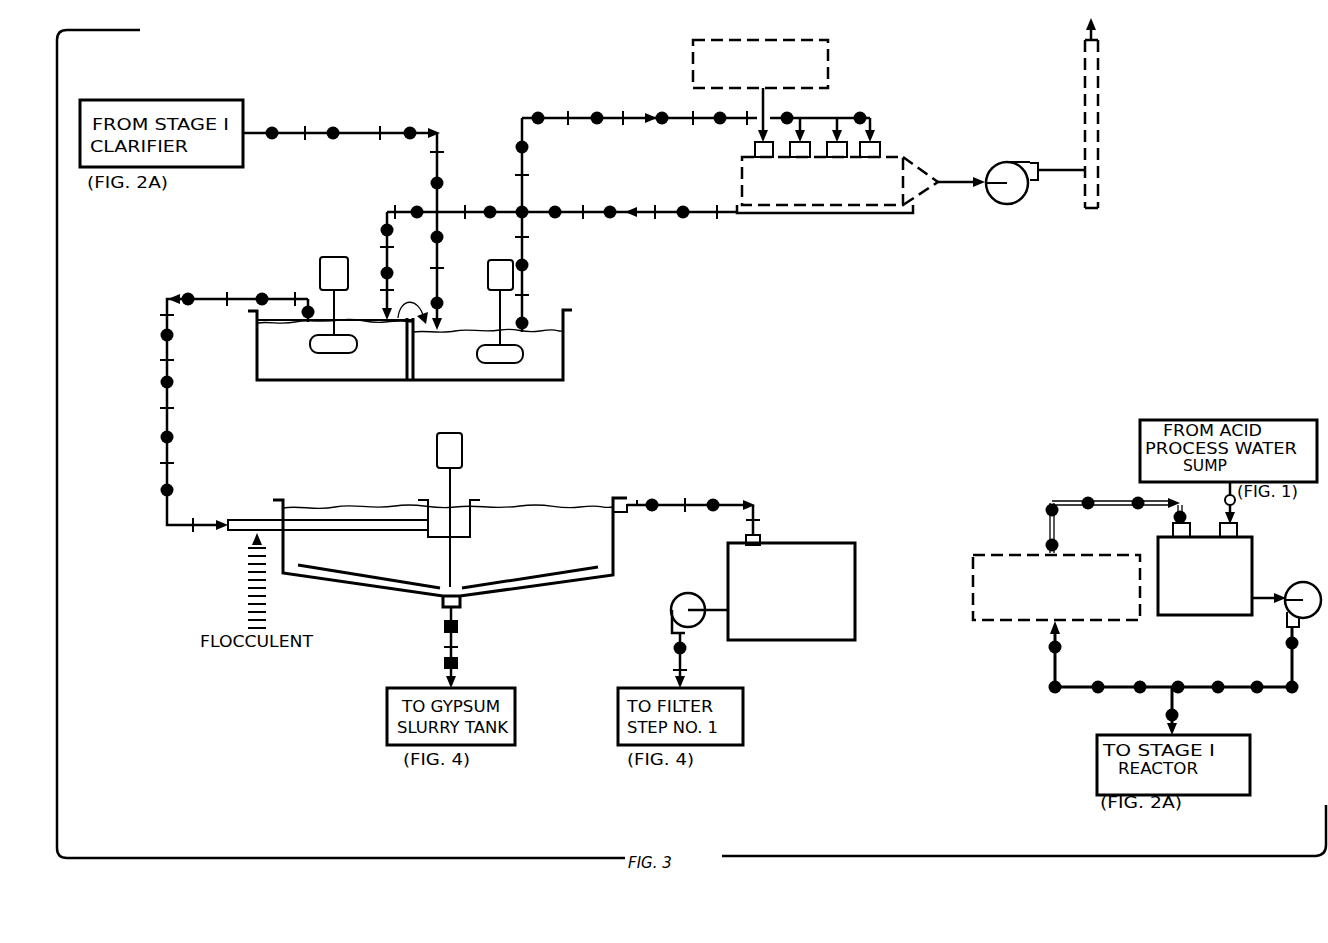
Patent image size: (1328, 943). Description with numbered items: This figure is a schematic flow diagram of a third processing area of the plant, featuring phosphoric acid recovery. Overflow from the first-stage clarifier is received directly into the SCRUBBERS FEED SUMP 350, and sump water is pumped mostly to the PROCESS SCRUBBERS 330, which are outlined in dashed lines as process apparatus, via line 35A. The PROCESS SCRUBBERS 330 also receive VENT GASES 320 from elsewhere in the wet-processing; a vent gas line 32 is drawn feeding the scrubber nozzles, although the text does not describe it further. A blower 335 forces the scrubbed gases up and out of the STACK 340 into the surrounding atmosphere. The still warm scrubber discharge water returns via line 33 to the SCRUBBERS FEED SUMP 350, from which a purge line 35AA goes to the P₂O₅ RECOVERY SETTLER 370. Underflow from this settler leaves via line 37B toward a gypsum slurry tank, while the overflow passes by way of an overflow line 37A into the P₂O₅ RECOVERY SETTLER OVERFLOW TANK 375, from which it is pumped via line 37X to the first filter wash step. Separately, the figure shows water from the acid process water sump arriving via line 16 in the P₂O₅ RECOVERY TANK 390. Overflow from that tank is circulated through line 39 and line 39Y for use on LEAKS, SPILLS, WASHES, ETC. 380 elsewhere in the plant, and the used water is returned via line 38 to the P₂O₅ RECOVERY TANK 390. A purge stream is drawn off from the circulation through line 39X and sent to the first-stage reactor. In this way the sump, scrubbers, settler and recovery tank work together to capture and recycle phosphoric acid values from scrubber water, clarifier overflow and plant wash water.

The line 16 is at (1236, 503).
The vent gas line 32 is at (765, 102).
The line 33 is at (683, 216).
The line 35A is at (524, 187).
The purge line 35AA is at (162, 382).
The vent gases 320 is at (828, 53).
The process scrubbers 330 is at (742, 184).
The blower 335 is at (988, 165).
The stack 340 is at (1100, 80).
The scrubbers feed sump 350 is at (563, 352).
The P₂O₅ recovery settler 370 is at (600, 578).
The settler overflow line 37A is at (693, 503).
The line 37B is at (455, 648).
The line 37X is at (678, 668).
The P₂O₅ recovery settler overflow tank 375 is at (822, 543).
The line 38 is at (1050, 532).
The leaks, spills, washes, etc. 380 is at (1022, 622).
The P₂O₅ recovery tank 390 is at (1188, 615).
The line 39 is at (1220, 686).
The line 39X is at (1175, 703).
The line 39Y is at (1078, 689).